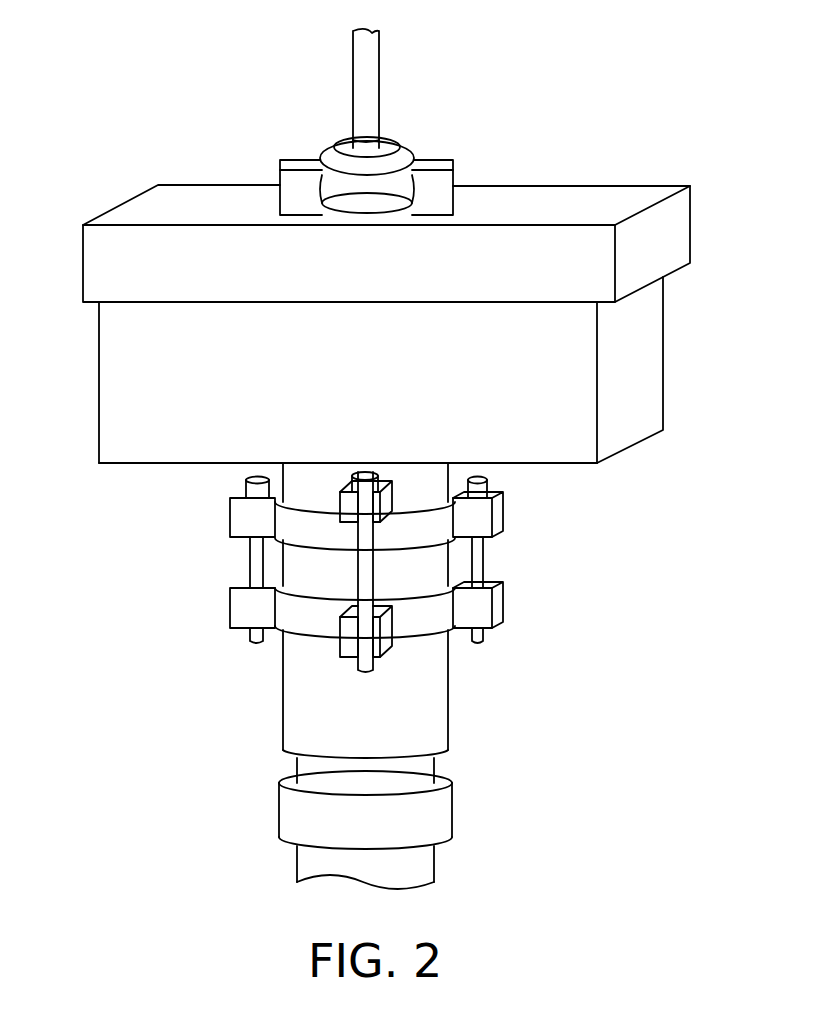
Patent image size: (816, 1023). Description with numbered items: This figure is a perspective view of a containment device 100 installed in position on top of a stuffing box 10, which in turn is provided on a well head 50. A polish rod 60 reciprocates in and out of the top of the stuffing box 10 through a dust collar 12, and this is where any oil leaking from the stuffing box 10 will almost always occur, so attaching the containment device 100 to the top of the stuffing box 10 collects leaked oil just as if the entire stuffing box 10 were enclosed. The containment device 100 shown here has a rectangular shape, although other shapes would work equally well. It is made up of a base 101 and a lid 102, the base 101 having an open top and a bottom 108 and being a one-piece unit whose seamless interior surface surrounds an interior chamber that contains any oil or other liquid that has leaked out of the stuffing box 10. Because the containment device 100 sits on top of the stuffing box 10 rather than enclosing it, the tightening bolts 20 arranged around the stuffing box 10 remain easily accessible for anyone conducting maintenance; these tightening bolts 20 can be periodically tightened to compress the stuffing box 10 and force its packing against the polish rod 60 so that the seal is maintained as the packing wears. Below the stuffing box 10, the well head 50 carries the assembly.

The containment device 100 is at (643, 145).
The polish rod 60 is at (368, 77).
The dust collar 12 is at (433, 160).
The lid 102 is at (660, 232).
The base 101 is at (386, 397).
The bottom 108 is at (126, 464).
The stuffing box 10 is at (392, 586).
The tightening bolts 20 is at (250, 557).
The well head 50 is at (472, 797).